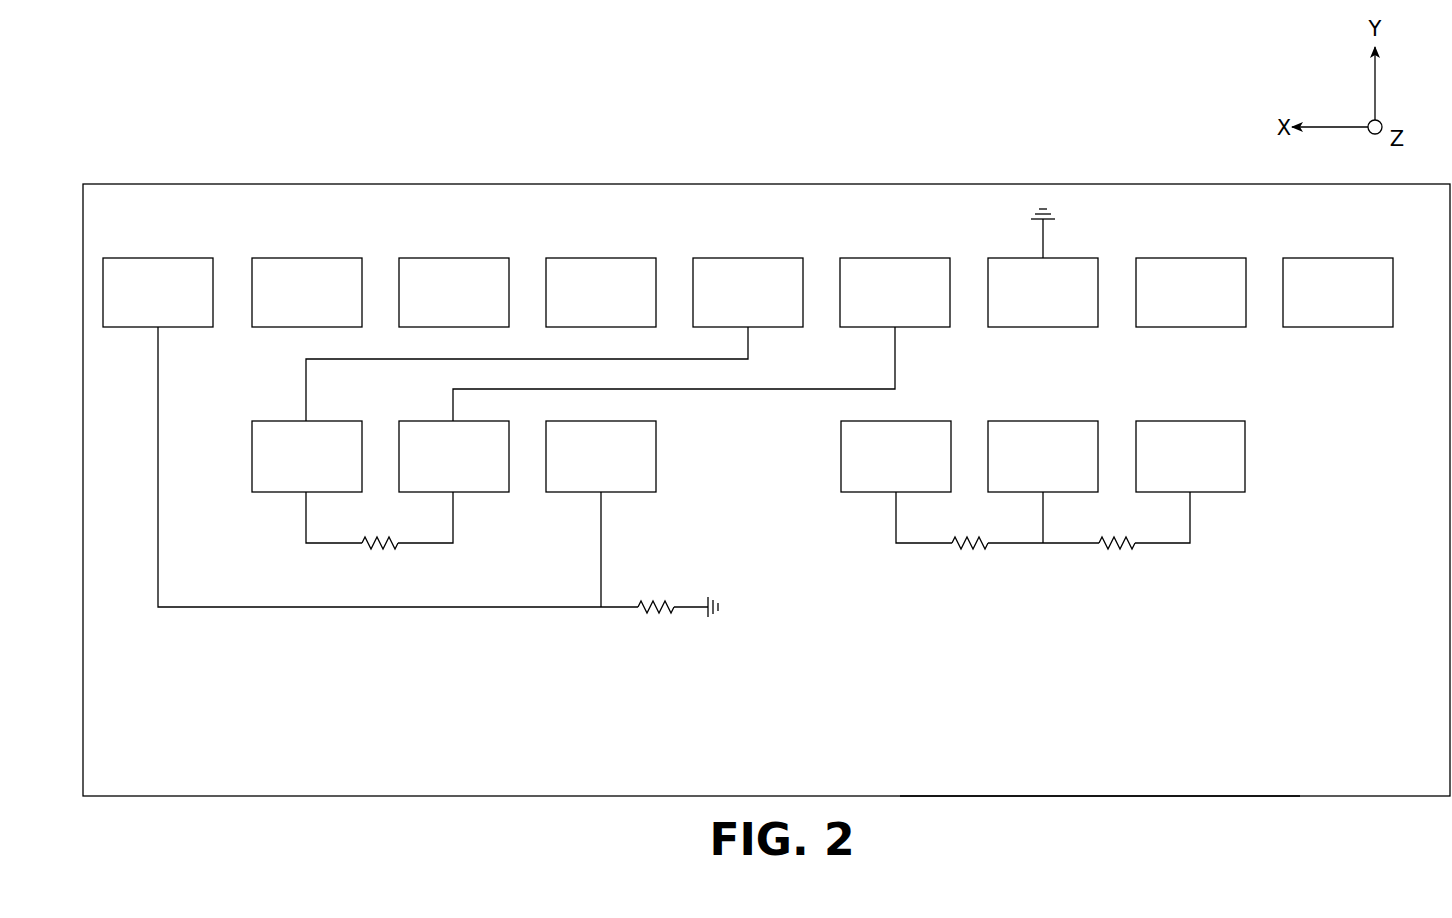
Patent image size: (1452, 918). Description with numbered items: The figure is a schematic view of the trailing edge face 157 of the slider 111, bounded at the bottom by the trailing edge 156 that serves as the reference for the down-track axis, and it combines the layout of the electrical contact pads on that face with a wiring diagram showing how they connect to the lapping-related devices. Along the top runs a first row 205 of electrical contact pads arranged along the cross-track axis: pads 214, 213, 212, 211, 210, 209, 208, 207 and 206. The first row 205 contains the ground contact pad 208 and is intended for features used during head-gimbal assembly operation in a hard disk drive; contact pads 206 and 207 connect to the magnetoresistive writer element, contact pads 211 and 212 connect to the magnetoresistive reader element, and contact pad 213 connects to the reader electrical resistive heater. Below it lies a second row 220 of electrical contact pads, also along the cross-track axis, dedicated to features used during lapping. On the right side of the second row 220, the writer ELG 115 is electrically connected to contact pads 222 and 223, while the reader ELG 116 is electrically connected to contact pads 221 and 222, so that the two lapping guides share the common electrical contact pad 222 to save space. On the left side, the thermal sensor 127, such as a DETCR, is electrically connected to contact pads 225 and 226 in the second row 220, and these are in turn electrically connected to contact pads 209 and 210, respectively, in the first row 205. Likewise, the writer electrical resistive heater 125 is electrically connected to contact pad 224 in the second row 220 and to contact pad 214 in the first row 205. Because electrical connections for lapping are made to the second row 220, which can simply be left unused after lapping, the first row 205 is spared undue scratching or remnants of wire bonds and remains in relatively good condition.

The slider 111 is at (534, 228).
The trailing edge 156 is at (1078, 798).
The trailing edge face 157 is at (1207, 668).
The first row of electrical contact pads 205 is at (1398, 296).
The electrical contact pad 206 is at (1338, 275).
The electrical contact pad 207 is at (1191, 275).
The ground contact pad 208 is at (1088, 270).
The electrical contact pad 209 is at (906, 275).
The electrical contact pad 210 is at (751, 275).
The electrical contact pad 211 is at (611, 275).
The electrical contact pad 212 is at (463, 275).
The electrical contact pad 213 is at (315, 275).
The electrical contact pad 214 is at (168, 275).
The second row of electrical contact pads 220 is at (1256, 451).
The electrical contact pad 221 is at (1203, 435).
The common electrical contact pad 222 is at (1050, 433).
The electrical contact pad 223 is at (925, 433).
The electrical contact pad 224 is at (612, 432).
The electrical contact pad 225 is at (467, 432).
The electrical contact pad 226 is at (320, 432).
The thermal sensor 127 is at (422, 578).
The writer electrical resistive heater 125 is at (659, 587).
The writer ELG 115 is at (969, 553).
The reader ELG 116 is at (1116, 553).